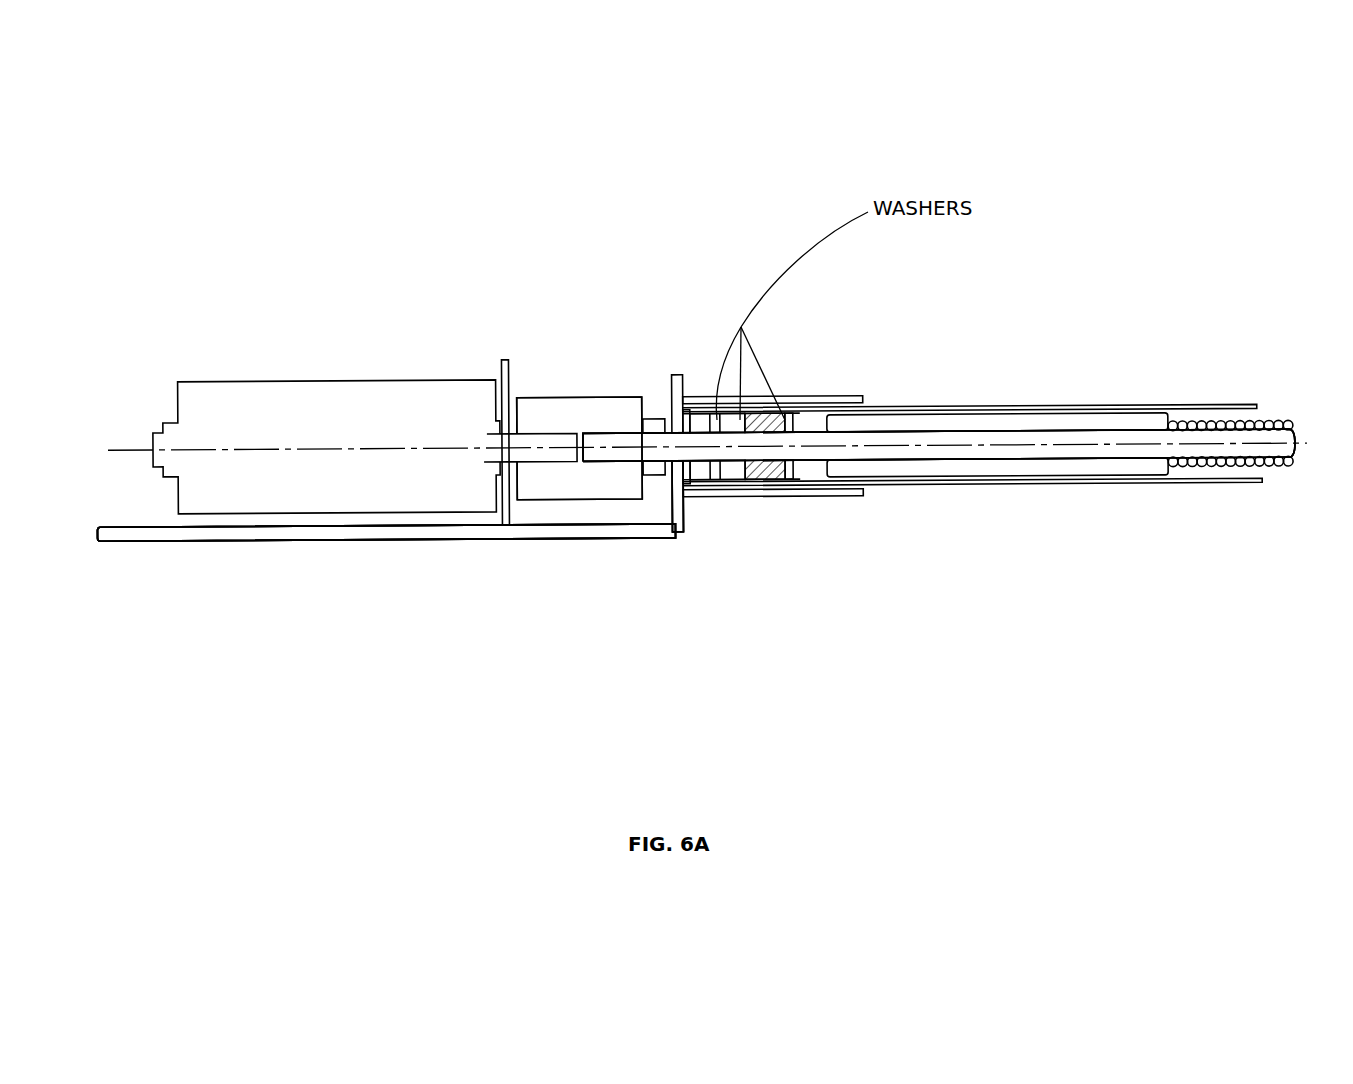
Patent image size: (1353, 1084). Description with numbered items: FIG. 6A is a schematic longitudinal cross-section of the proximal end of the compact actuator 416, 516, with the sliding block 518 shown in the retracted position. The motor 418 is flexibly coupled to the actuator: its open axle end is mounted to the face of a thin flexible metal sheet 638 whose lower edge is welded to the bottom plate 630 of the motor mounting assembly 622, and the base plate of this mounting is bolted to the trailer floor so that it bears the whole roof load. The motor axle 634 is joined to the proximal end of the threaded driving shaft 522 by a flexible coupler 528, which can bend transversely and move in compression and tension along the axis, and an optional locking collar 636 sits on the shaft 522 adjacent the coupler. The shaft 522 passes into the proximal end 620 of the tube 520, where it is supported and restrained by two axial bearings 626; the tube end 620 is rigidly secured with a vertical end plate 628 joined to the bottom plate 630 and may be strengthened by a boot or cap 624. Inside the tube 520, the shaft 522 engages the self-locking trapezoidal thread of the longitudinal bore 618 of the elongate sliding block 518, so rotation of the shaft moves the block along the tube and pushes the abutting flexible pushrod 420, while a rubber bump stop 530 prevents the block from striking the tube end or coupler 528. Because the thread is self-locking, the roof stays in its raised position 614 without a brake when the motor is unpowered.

The motor 418 is at (307, 378).
The threaded shaft 522 is at (612, 442).
The flexible metal sheet 638 is at (502, 358).
The motor axle 634 is at (533, 443).
The locking collar 636 is at (650, 410).
The boot or cap 624 is at (832, 392).
The tube 520 is at (990, 402).
The flexible pushrod 420 is at (1220, 418).
The sliding block 518 is at (998, 472).
The inner shaft 614 is at (939, 445).
The longitudinal bore 618 is at (1115, 458).
The rubber bump stop 530 is at (770, 472).
The axial bearings 626 is at (704, 472).
The proximal end of the tube 620 is at (689, 507).
The vertical end plate 628 is at (666, 507).
The flexible coupler 528 is at (552, 487).
The bottom plate 630 is at (267, 540).
The motor mounting assembly 622 is at (365, 540).
The compact actuator 416 is at (608, 677).
The compact actuator 516 is at (386, 532).